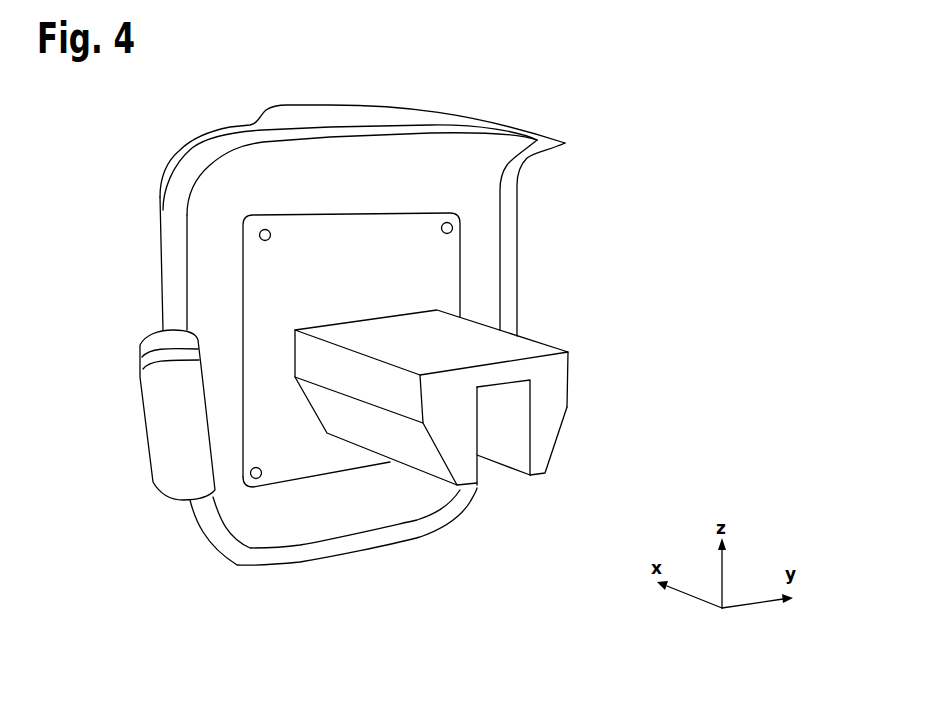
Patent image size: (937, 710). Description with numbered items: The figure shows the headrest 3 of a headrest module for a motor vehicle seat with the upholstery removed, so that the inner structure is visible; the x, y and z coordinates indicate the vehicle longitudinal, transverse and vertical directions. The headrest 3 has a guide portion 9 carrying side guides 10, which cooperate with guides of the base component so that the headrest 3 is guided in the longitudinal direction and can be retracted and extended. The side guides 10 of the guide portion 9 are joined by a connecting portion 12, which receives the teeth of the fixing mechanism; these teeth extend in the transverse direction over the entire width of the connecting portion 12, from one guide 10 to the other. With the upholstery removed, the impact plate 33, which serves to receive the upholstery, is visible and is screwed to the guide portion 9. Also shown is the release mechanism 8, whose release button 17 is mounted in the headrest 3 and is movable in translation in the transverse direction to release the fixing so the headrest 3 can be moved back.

The headrest 3 is at (605, 90).
The release mechanism 8 is at (120, 512).
The guide portion 9 is at (490, 245).
The side guides 10 is at (422, 450).
The connecting portion 12 is at (497, 377).
The release button 17 is at (165, 428).
The impact plate 33 is at (222, 236).